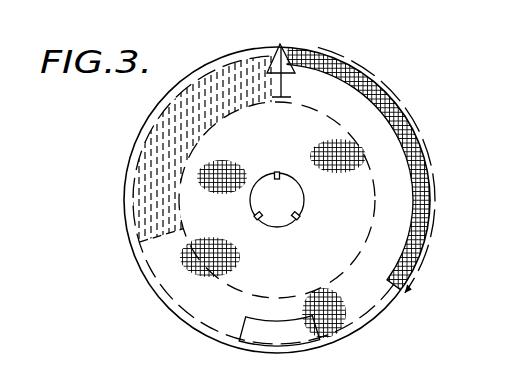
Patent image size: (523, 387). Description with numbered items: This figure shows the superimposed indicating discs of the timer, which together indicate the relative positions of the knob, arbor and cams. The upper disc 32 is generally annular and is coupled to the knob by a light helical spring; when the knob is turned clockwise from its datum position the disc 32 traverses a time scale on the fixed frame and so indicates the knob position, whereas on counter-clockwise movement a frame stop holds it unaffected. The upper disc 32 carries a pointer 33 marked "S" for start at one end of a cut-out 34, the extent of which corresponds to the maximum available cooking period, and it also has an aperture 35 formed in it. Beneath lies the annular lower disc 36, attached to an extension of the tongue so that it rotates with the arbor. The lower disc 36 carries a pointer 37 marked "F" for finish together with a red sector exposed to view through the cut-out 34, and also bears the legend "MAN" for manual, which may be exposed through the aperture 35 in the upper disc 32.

The upper disc 32 is at (178, 317).
The pointer 33 is at (271, 63).
The cut-out 34 is at (413, 132).
The aperture 35 is at (290, 328).
The lower disc 36 is at (362, 83).
The pointer 37 is at (283, 45).